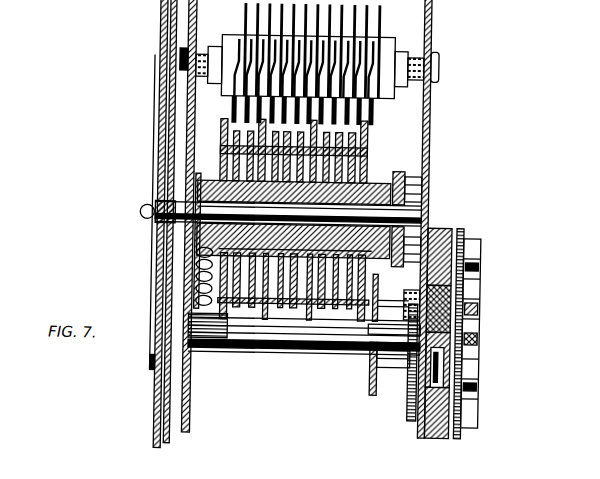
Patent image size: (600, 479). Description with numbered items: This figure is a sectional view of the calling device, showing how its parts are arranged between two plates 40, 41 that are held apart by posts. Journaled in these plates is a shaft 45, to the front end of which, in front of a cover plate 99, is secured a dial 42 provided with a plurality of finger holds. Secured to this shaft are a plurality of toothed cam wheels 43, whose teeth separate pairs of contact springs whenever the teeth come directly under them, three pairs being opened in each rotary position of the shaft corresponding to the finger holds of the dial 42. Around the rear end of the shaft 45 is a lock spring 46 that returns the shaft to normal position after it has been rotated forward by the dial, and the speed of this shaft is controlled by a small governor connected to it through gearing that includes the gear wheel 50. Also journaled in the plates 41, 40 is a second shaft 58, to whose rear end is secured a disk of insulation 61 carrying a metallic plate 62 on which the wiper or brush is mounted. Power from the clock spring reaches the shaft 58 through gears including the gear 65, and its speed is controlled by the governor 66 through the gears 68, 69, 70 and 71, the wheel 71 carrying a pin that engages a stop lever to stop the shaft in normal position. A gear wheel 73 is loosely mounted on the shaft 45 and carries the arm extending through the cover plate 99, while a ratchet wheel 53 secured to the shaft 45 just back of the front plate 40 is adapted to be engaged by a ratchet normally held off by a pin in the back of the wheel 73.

The plate 40 is at (190, 23).
The plate 41 is at (430, 24).
The dial 42 is at (158, 149).
The toothed cam wheels 43 is at (305, 302).
The shaft 45 is at (200, 203).
The lock spring 46 is at (412, 177).
The gear wheel 50 is at (394, 176).
The ratchet wheel 53 is at (222, 136).
The shaft 58 is at (330, 332).
The disk of insulation 61 is at (480, 287).
The metallic plate 62 is at (481, 310).
The gear 65 is at (214, 340).
The governor 66 is at (197, 286).
The gear 68 is at (397, 299).
The gear 69 is at (412, 392).
The gear 70 is at (395, 366).
The wheel 71 is at (371, 384).
The gear wheel 73 is at (184, 269).
The cover plate 99 is at (170, 84).